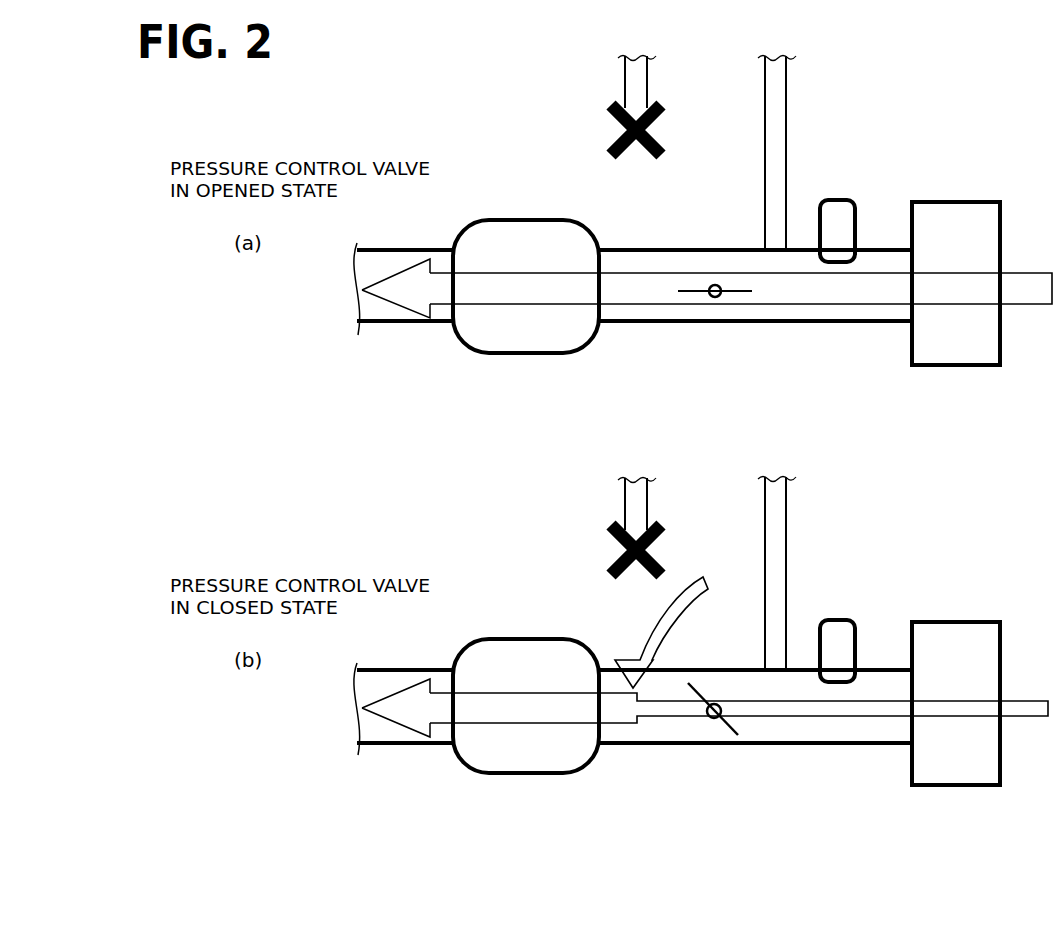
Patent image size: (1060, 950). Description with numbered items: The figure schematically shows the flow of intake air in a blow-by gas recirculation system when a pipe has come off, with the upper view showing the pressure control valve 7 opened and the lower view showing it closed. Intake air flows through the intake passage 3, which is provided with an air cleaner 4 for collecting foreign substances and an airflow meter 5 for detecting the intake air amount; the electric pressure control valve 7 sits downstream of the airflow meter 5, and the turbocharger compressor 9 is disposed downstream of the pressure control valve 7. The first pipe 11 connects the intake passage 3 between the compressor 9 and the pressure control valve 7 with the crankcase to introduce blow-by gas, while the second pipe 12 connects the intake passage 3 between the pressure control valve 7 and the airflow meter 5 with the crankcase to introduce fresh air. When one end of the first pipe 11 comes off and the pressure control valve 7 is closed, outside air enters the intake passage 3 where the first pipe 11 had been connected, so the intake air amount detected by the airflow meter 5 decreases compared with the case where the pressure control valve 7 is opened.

The intake passage 3 is at (868, 312).
The air cleaner 4 is at (968, 356).
The airflow meter 5 is at (837, 207).
The pressure control valve 7 is at (718, 297).
The compressor 9 is at (513, 330).
The first pipe 11 is at (637, 77).
The second pipe 12 is at (777, 113).